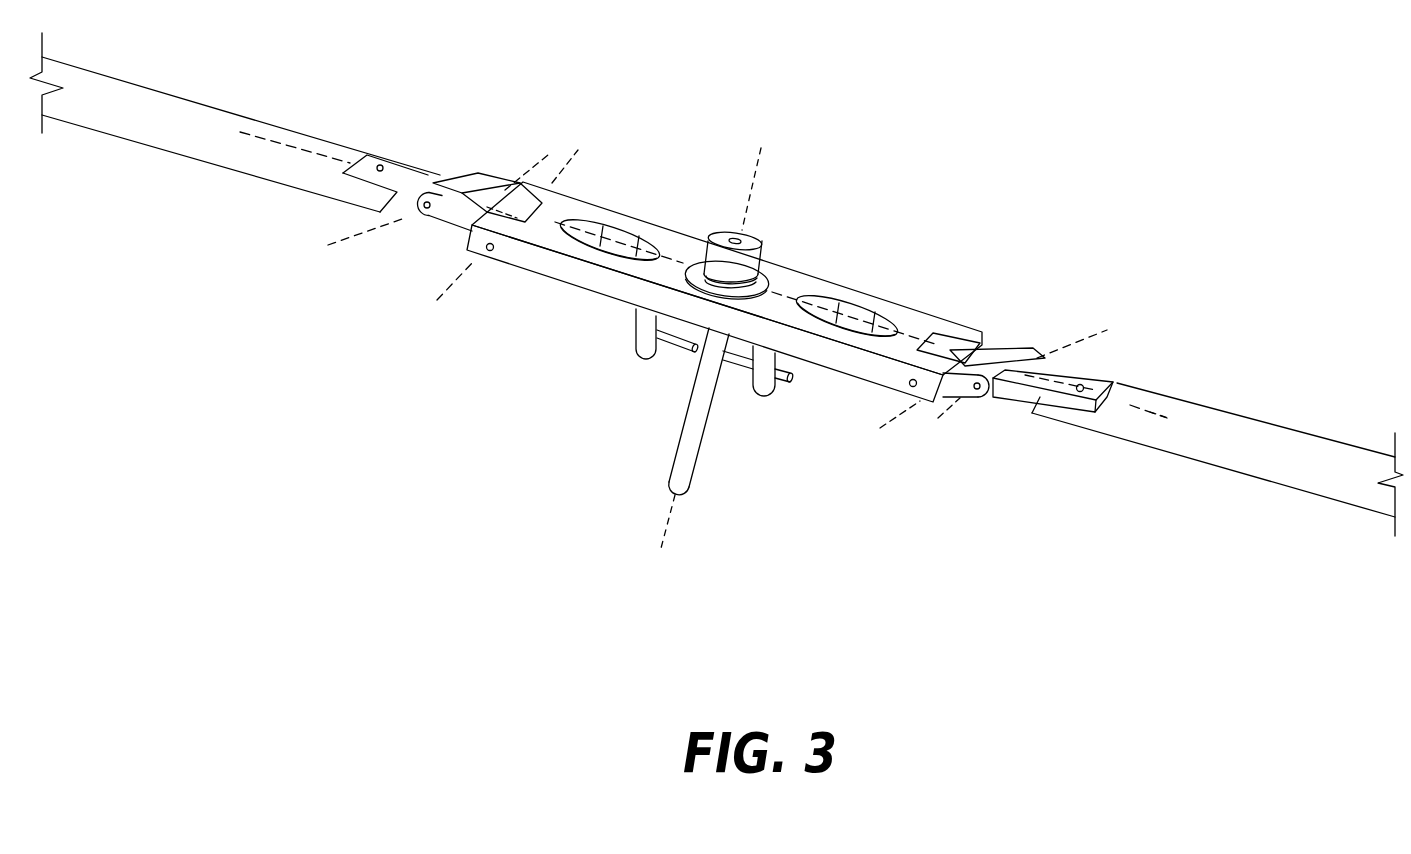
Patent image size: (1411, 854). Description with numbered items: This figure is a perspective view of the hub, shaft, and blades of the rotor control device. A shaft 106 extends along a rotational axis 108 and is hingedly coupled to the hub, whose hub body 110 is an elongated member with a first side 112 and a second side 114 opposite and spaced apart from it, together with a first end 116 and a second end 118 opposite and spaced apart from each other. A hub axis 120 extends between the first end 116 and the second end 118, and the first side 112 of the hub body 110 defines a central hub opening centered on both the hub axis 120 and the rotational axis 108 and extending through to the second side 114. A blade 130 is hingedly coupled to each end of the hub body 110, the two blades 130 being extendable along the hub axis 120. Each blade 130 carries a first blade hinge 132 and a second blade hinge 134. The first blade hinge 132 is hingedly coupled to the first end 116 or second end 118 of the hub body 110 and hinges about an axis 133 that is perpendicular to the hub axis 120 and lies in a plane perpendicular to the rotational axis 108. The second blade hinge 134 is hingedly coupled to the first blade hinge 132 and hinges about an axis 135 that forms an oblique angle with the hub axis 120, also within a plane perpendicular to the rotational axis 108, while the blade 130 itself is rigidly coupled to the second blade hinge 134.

The shaft 106 is at (706, 445).
The rotational axis 108 is at (667, 533).
The hub body 110 is at (826, 262).
The first side 112 is at (678, 232).
The second side 114 is at (608, 298).
The first end 116 is at (522, 176).
The second end 118 is at (946, 406).
The hub axis 120 is at (1160, 415).
The blade 130 is at (110, 97).
The first blade hinge 132 is at (466, 176).
The axis 133 is at (464, 272).
The second blade hinge 134 is at (395, 150).
The axis 135 is at (363, 232).